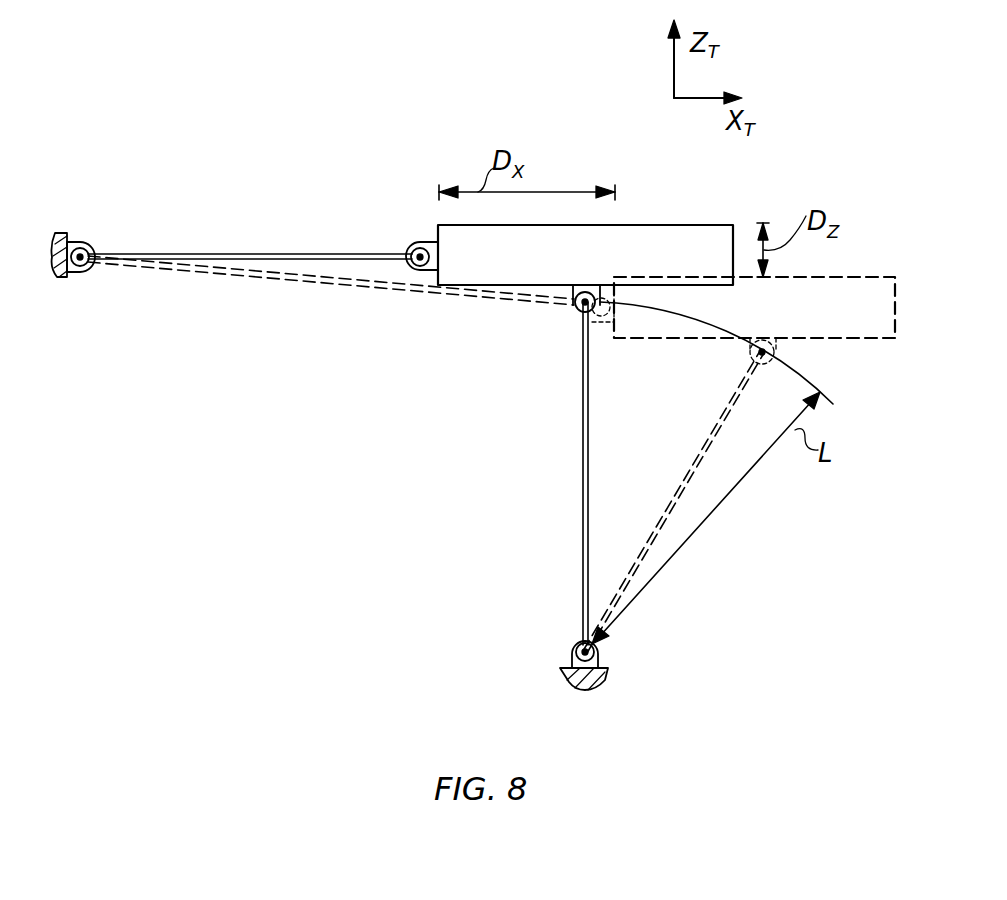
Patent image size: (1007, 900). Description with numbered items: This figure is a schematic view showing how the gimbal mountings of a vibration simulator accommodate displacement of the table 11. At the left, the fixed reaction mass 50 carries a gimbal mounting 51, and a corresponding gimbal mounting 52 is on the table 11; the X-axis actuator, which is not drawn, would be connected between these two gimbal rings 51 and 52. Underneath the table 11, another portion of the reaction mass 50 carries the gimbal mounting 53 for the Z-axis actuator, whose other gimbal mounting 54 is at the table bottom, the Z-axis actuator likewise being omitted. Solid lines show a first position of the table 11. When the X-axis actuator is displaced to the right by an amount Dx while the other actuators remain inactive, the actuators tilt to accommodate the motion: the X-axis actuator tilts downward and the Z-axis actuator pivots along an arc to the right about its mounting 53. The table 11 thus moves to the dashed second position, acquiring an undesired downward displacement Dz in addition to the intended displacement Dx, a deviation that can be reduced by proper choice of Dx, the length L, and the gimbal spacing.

The table 11 is at (666, 281).
The fixed reaction mass 50 is at (75, 272).
The gimbal mounting at the reaction mass 51 is at (85, 243).
The gimbal mounting at the table 52 is at (415, 250).
The gimbal mounting for the Z-axis actuator at the reaction mass 53 is at (575, 651).
The gimbal mounting for the Z-axis actuator at the table bottom 54 is at (575, 310).